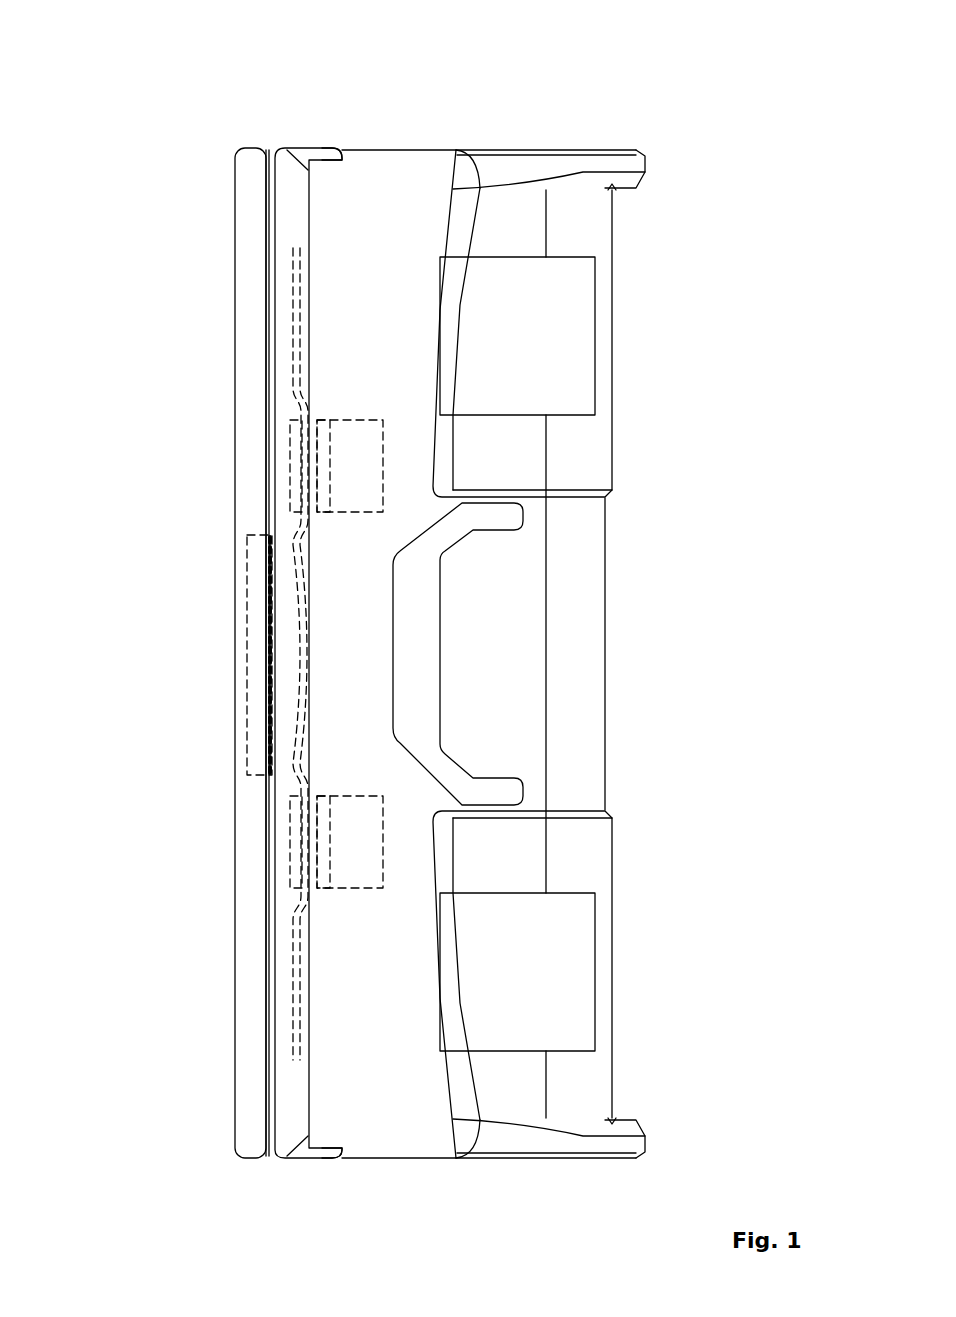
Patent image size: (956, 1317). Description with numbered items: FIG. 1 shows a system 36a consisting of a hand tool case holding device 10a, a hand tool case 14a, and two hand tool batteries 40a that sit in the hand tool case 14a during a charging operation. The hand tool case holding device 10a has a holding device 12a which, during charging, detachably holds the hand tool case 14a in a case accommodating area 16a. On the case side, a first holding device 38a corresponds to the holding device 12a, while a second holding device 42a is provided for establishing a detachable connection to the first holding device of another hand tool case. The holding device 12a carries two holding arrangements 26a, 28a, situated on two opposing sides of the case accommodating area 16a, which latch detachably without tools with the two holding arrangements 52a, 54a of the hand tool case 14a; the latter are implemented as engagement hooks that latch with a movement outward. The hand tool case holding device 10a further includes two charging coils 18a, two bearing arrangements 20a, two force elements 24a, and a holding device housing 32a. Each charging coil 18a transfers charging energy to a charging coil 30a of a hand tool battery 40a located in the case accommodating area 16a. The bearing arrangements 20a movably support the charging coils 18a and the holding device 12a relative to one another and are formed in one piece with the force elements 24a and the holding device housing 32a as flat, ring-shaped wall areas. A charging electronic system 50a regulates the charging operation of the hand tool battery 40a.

The hand tool case holding device 10a is at (265, 108).
The holding device 12a is at (320, 134).
The hand tool case 14a is at (594, 656).
The case accommodating area 16a is at (556, 134).
The charging coil 18a is at (293, 467).
The bearing arrangement 20a is at (210, 654).
The force element 24a is at (293, 385).
The holding arrangement 26a is at (334, 149).
The holding arrangement 28a is at (327, 1158).
The charging coil 30a is at (318, 438).
The holding device housing 32a is at (237, 283).
The system 36a is at (629, 104).
The first holding device 38a is at (489, 659).
The hand tool battery 40a is at (347, 482).
The second holding device 42a is at (662, 158).
The charging electronic system 50a is at (262, 632).
The holding arrangement 52a is at (396, 132).
The holding arrangement 54a is at (382, 1168).